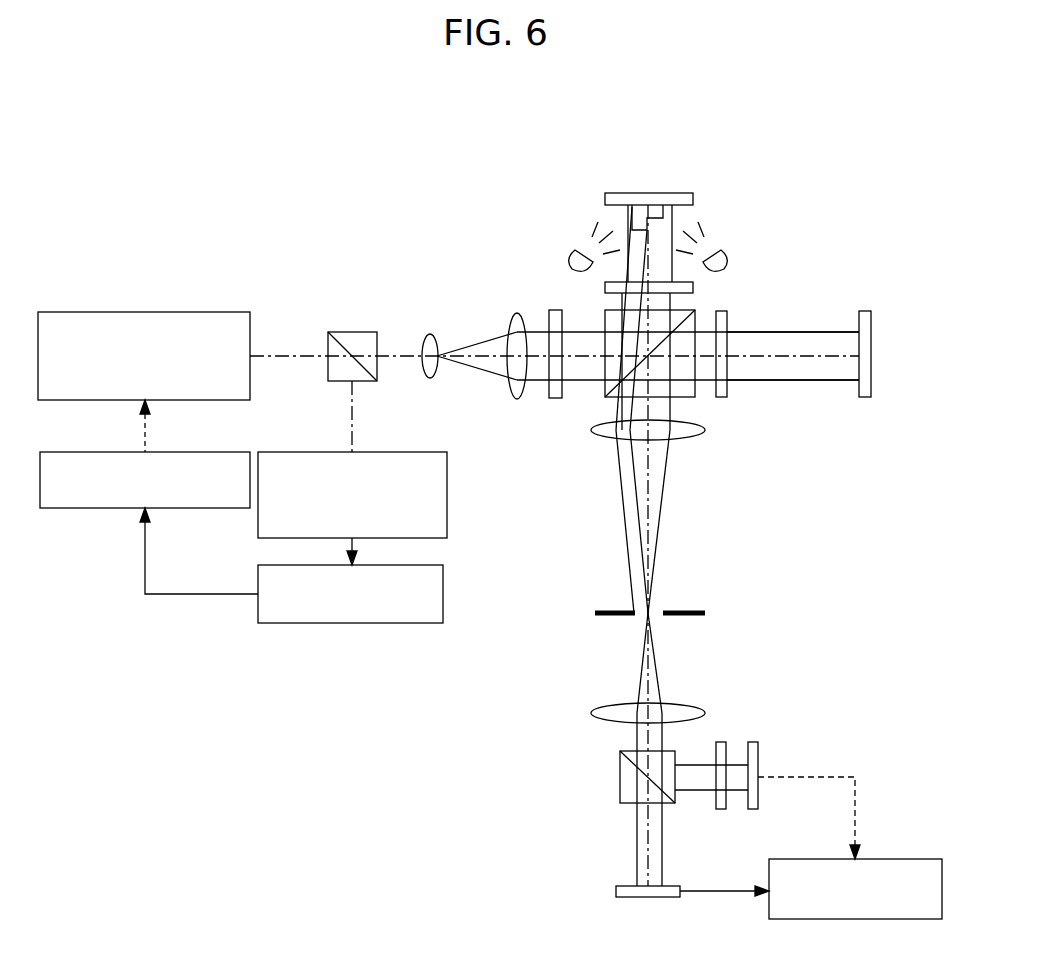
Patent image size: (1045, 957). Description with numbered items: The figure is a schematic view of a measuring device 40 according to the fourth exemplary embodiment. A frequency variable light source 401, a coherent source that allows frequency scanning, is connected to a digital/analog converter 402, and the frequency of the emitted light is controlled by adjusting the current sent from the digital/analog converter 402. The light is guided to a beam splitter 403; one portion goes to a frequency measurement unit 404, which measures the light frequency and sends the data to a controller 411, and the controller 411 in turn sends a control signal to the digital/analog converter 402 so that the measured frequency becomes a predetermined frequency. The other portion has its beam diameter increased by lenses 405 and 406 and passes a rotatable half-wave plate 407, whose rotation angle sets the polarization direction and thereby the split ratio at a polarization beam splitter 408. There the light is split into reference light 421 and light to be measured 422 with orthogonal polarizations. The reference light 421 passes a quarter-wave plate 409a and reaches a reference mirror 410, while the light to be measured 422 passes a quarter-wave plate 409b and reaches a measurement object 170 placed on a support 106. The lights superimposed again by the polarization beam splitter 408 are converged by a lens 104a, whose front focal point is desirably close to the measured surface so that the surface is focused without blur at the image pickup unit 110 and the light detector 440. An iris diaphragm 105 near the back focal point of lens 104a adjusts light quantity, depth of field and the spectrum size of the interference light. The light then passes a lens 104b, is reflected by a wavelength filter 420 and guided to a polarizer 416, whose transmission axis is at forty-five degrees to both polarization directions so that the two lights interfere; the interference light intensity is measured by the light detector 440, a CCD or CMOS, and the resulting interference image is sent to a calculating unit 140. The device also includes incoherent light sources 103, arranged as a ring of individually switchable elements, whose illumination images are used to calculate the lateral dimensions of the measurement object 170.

The measuring device 40 is at (549, 95).
The frequency variable light source 401 is at (197, 312).
The digital/analog converter 402 is at (112, 509).
The beam splitter 403 is at (358, 338).
The frequency measurement unit 404 is at (447, 498).
The lens 405 is at (430, 343).
The lens 406 is at (515, 317).
The λ/2 waveplate 407 is at (555, 315).
The polarization beam splitter 408 is at (685, 392).
The λ/4 waveplate 409a is at (722, 387).
The λ/4 waveplate 409b is at (694, 289).
The reference mirror 410 is at (862, 313).
The controller 411 is at (443, 594).
The polarizer 416 is at (722, 742).
The wavelength filter 420 is at (628, 780).
The reference light 421 is at (798, 340).
The light to be measured 422 is at (672, 225).
The light detector 440 is at (758, 753).
The incoherent light sources 103 is at (573, 256).
The lens 104a is at (605, 438).
The lens 104b is at (603, 704).
The iris diaphragm 105 is at (610, 611).
The support 106 is at (650, 193).
The image pickup unit 110 is at (616, 892).
The calculating unit 140 is at (899, 859).
The measurement object 170 is at (638, 220).